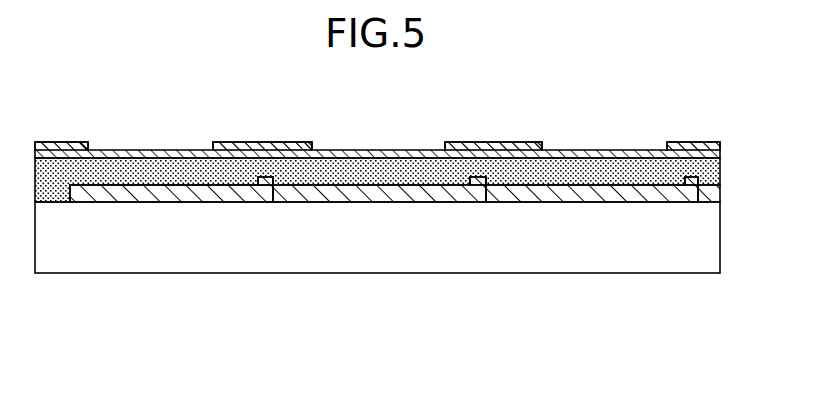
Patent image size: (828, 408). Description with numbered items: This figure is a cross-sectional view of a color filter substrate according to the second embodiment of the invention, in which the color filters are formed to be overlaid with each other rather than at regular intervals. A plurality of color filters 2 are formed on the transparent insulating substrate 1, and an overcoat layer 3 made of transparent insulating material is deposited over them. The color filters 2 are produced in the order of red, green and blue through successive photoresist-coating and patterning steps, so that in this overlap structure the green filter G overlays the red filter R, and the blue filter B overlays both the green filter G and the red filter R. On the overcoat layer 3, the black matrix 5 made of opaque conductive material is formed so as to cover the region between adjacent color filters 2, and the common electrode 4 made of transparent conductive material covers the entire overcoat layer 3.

The transparent insulating substrate 1 is at (710, 240).
The color filters 2 is at (395, 271).
The overcoat layer 3 is at (722, 171).
The common electrode 4 is at (722, 150).
The black matrix 5 is at (55, 142).
The red filter R is at (170, 203).
The green filter G is at (370, 203).
The blue filter B is at (584, 247).